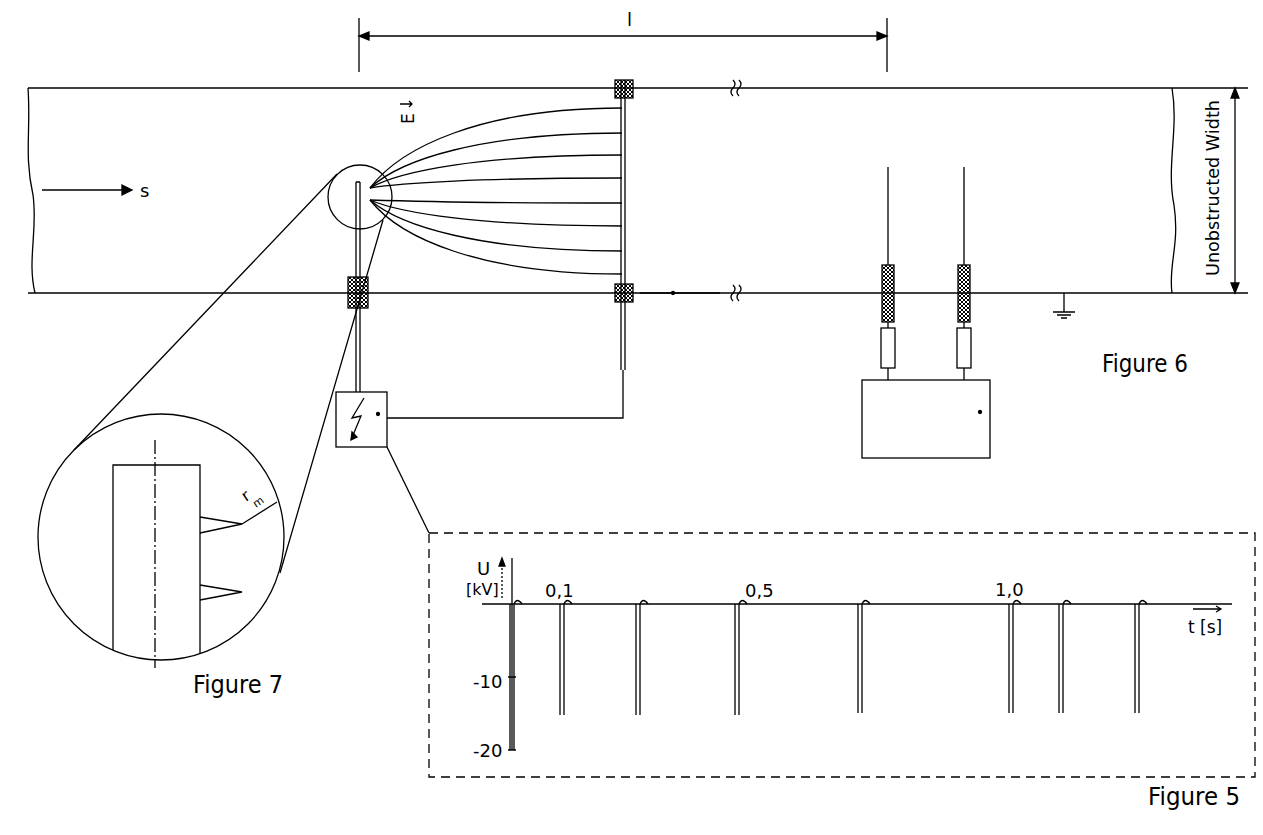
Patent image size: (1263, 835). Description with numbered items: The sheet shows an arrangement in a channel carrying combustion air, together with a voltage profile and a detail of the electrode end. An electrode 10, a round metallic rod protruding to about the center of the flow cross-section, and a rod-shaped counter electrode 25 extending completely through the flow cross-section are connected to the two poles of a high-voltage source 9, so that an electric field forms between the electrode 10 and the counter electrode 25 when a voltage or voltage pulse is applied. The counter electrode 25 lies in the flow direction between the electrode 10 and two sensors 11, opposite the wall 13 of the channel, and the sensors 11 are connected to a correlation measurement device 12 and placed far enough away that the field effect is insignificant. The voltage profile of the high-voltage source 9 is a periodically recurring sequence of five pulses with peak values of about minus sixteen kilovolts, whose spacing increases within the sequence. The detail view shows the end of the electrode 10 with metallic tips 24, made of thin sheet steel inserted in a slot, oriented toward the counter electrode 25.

In FIG. 6, the high-voltage source 9 is at (378, 414).
In FIG. 6, the electrode 10 is at (362, 240).
In FIG. 6, the sensors 11 is at (888, 184).
In FIG. 6, the correlation measurement device 12 is at (980, 412).
In FIG. 6, the wall 13 is at (673, 293).
In FIG. 7, the tips 24 is at (242, 524).
In FIG. 6, the counter electrode 25 is at (623, 188).